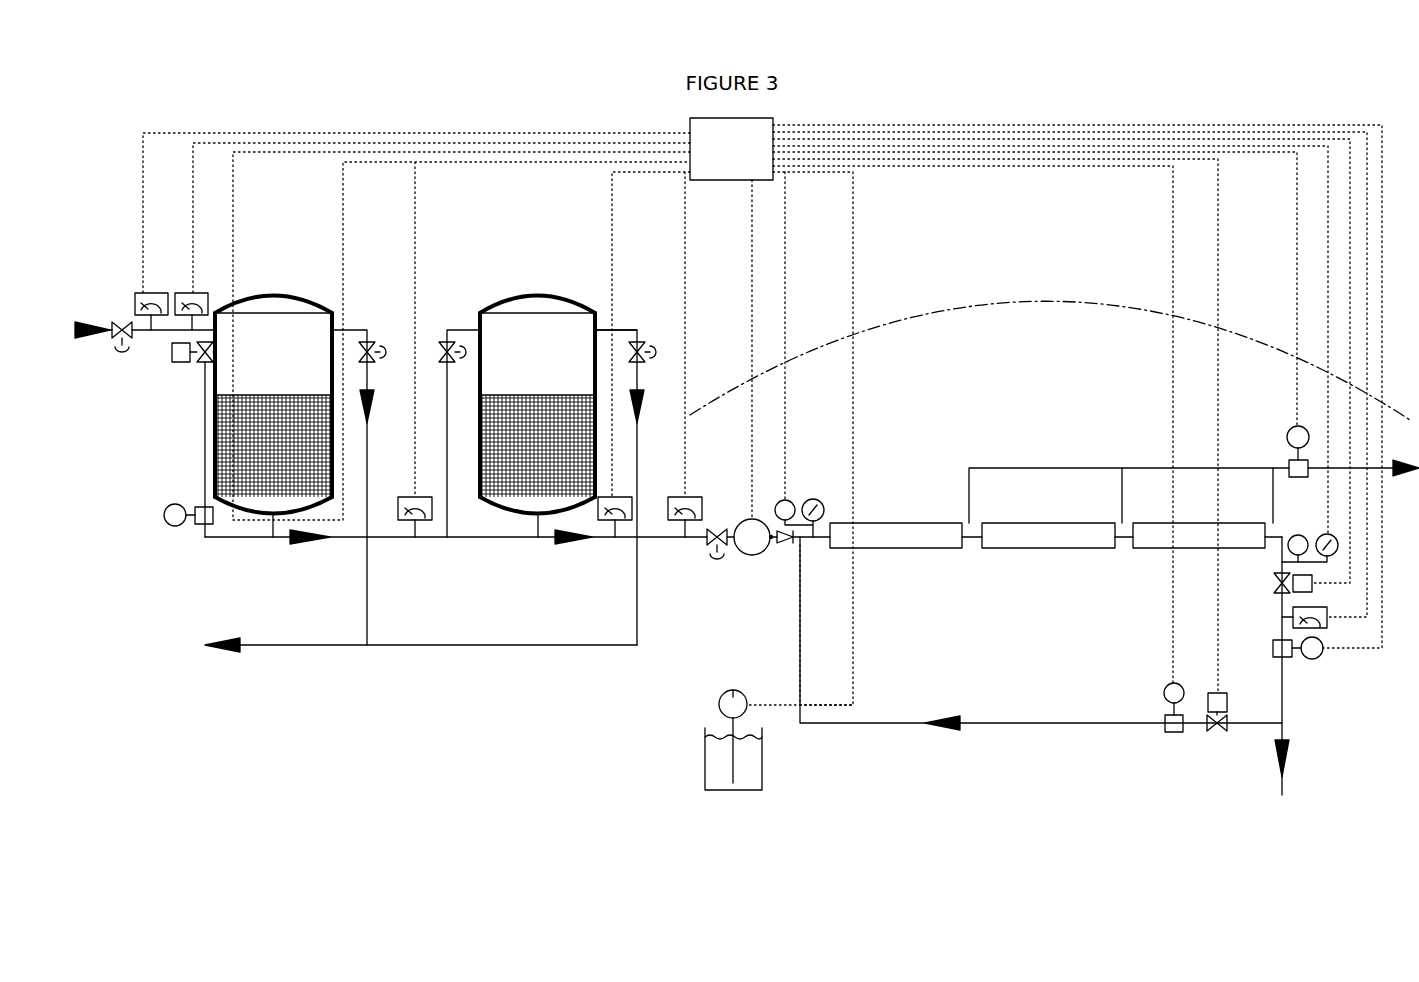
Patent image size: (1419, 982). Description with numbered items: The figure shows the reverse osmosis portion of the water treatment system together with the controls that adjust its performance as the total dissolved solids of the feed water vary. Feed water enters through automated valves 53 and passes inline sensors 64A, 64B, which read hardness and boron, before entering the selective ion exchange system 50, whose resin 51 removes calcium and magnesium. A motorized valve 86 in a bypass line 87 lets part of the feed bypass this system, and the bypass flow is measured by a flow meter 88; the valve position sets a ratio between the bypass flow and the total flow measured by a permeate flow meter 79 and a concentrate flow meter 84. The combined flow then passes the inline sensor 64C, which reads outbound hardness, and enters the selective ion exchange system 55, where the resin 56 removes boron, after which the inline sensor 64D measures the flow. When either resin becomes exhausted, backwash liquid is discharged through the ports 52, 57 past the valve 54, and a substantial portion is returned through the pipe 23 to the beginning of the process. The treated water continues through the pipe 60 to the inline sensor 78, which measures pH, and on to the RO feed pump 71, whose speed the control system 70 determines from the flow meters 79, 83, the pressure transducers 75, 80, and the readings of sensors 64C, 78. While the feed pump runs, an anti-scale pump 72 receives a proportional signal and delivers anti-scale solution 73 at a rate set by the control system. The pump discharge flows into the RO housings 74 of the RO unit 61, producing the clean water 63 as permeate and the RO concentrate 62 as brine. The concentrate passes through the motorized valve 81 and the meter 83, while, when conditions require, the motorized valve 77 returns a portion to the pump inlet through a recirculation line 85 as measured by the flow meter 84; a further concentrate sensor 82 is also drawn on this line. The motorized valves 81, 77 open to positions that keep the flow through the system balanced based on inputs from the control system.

The pipe 23 is at (530, 652).
The selective ion exchange system 50 is at (248, 298).
The resin 51 is at (300, 435).
The port 52 is at (350, 329).
The automated valve 53 is at (122, 322).
The valve 54 is at (375, 345).
The selective ion exchange system 55 is at (512, 298).
The resin 56 is at (566, 435).
The port 57 is at (612, 497).
The pipe 60 is at (665, 548).
The RO unit 61 is at (1045, 300).
The RO concentrate 62 is at (1277, 760).
The clean water 63 is at (1407, 458).
The inline sensor 64A is at (143, 292).
The inline sensor 64B is at (183, 292).
The inline sensor 64C is at (430, 497).
The inline sensor 64D is at (637, 328).
The control system 70 is at (690, 180).
The RO feed pump 71 is at (745, 519).
The anti-scale pump 72 is at (740, 711).
The anti-scale solution 73 is at (752, 746).
The RO housing 74 is at (1060, 528).
The pressure transducer 75 is at (797, 498).
The motorized valve 77 is at (1213, 732).
The inline sensor 78 is at (703, 495).
The permeate flow meter 79 is at (1290, 428).
The pressure transducer 80 is at (1290, 556).
The motorized valve 81 is at (1275, 583).
The concentrate sensor 82 is at (1292, 617).
The meter 83 is at (1272, 648).
The flow meter 84 is at (1172, 733).
The recirculation line 85 is at (900, 728).
The motorized valve 86 is at (172, 352).
The bypass line 87 is at (205, 384).
The flow meter 88 is at (197, 507).